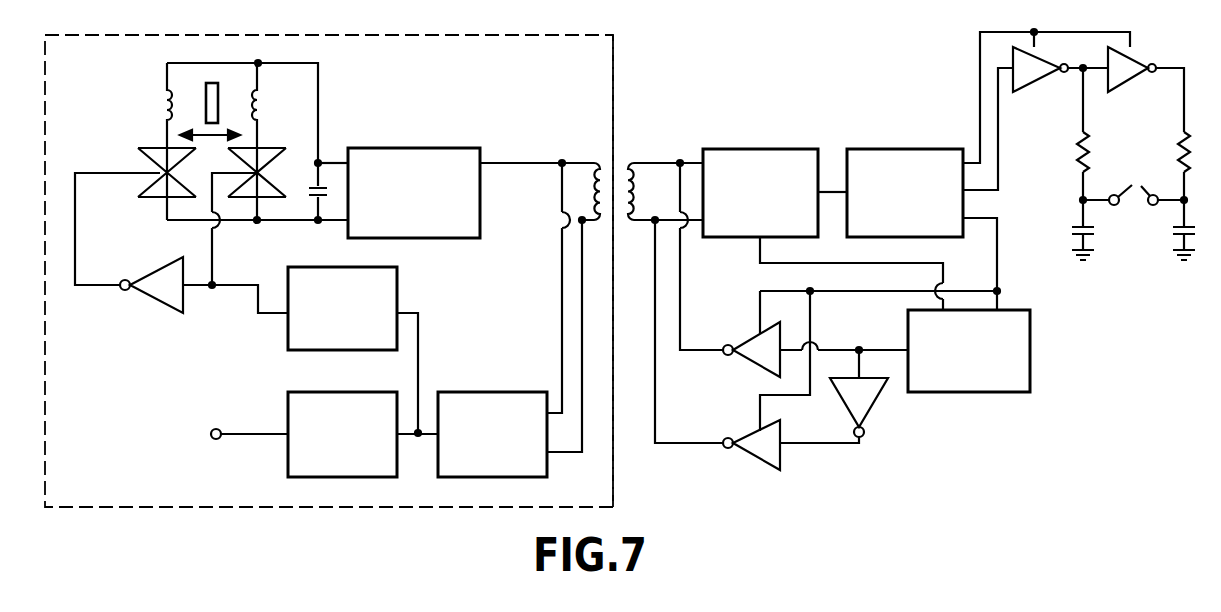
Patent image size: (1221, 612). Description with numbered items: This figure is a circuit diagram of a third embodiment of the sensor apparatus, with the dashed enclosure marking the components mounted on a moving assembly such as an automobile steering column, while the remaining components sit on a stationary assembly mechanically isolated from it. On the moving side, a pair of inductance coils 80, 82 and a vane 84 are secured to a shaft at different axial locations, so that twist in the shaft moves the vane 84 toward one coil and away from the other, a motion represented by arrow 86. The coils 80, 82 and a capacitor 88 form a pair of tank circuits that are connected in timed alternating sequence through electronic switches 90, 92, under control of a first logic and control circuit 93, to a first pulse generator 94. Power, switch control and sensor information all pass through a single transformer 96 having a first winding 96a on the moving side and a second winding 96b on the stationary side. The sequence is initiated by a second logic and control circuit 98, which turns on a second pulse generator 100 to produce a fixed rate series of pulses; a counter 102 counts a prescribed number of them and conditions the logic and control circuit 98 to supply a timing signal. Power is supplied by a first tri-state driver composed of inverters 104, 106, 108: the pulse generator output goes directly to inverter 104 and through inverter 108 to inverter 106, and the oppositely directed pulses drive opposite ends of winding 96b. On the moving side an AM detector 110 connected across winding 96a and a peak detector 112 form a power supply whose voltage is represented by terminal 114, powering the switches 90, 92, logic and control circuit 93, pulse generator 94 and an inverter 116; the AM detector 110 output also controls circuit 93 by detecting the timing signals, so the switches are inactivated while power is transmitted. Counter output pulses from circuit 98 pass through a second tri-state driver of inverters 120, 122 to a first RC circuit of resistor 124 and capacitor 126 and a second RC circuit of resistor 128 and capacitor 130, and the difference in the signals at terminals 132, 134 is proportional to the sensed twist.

The inductance coil 80 is at (162, 100).
The inductance coil 82 is at (264, 106).
The vane 84 is at (208, 86).
The arrow 86 is at (210, 143).
The capacitor 88 is at (307, 190).
The electronic switch 90 is at (150, 148).
The electronic switch 92 is at (272, 148).
The first logic and control circuit 93 is at (400, 267).
The first pulse generator 94 is at (416, 148).
The transformer 96 is at (619, 156).
The first winding 96a is at (600, 165).
The second winding 96b is at (632, 164).
The second logic and control circuit 98 is at (905, 149).
The second pulse generator 100 is at (1030, 330).
The counter 102 is at (757, 149).
The inverter 104 is at (753, 335).
The inverter 106 is at (747, 455).
The inverter 108 is at (881, 412).
The AM detector 110 is at (488, 392).
The peak detector 112 is at (356, 392).
The terminal 114 is at (216, 429).
The inverter 116 is at (168, 268).
The inverter 120 is at (1045, 78).
The inverter 122 is at (1138, 78).
The resistor 124 is at (1090, 153).
The capacitor 126 is at (1077, 227).
The resistor 128 is at (1178, 150).
The capacitor 130 is at (1176, 230).
The terminal 132 is at (1107, 186).
The terminal 134 is at (1160, 186).